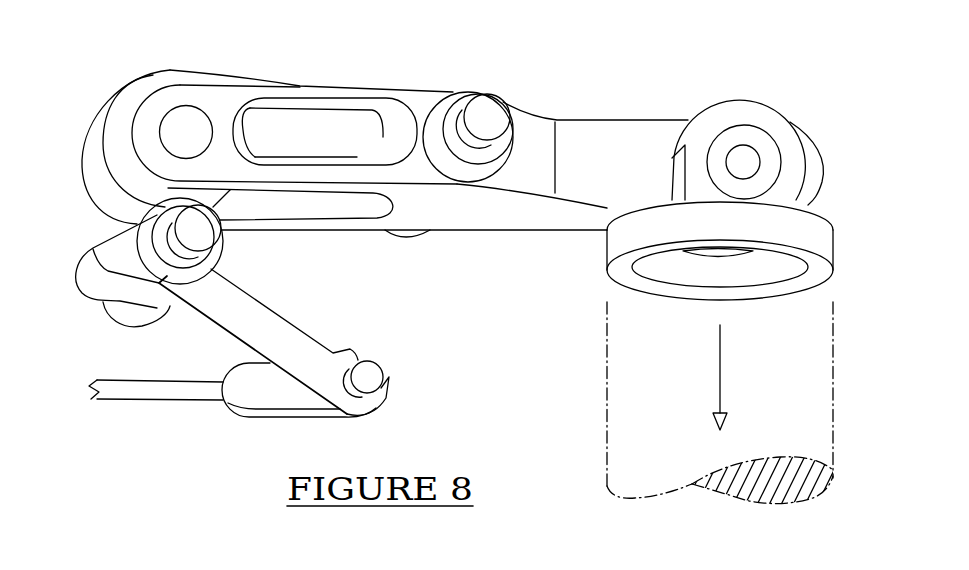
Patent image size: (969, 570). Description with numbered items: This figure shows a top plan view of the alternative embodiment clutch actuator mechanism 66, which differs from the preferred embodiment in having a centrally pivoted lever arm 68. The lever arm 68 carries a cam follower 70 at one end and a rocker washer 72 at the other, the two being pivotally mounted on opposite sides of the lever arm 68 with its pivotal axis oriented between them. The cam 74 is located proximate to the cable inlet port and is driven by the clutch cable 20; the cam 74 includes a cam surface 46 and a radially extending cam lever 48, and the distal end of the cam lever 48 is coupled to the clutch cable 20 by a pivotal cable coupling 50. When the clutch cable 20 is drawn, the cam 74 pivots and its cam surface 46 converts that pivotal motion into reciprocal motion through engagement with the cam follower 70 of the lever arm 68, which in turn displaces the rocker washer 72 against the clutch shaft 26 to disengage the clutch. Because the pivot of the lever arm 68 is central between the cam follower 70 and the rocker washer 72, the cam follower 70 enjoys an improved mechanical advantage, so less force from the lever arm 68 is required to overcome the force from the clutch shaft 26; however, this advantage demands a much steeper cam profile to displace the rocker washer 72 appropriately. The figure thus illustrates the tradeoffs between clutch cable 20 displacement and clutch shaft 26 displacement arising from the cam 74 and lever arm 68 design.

The clutch cable 20 is at (132, 380).
The clutch shaft 26 is at (834, 384).
The cam surface 46 is at (72, 285).
The cam lever 48 is at (281, 316).
The pivotal cable coupling 50 is at (262, 421).
The alternative embodiment clutch actuator mechanism 66 is at (417, 46).
The lever arm 68 is at (637, 119).
The cam follower 70 is at (172, 70).
The rocker washer 72 is at (834, 237).
The cam 74 is at (80, 254).